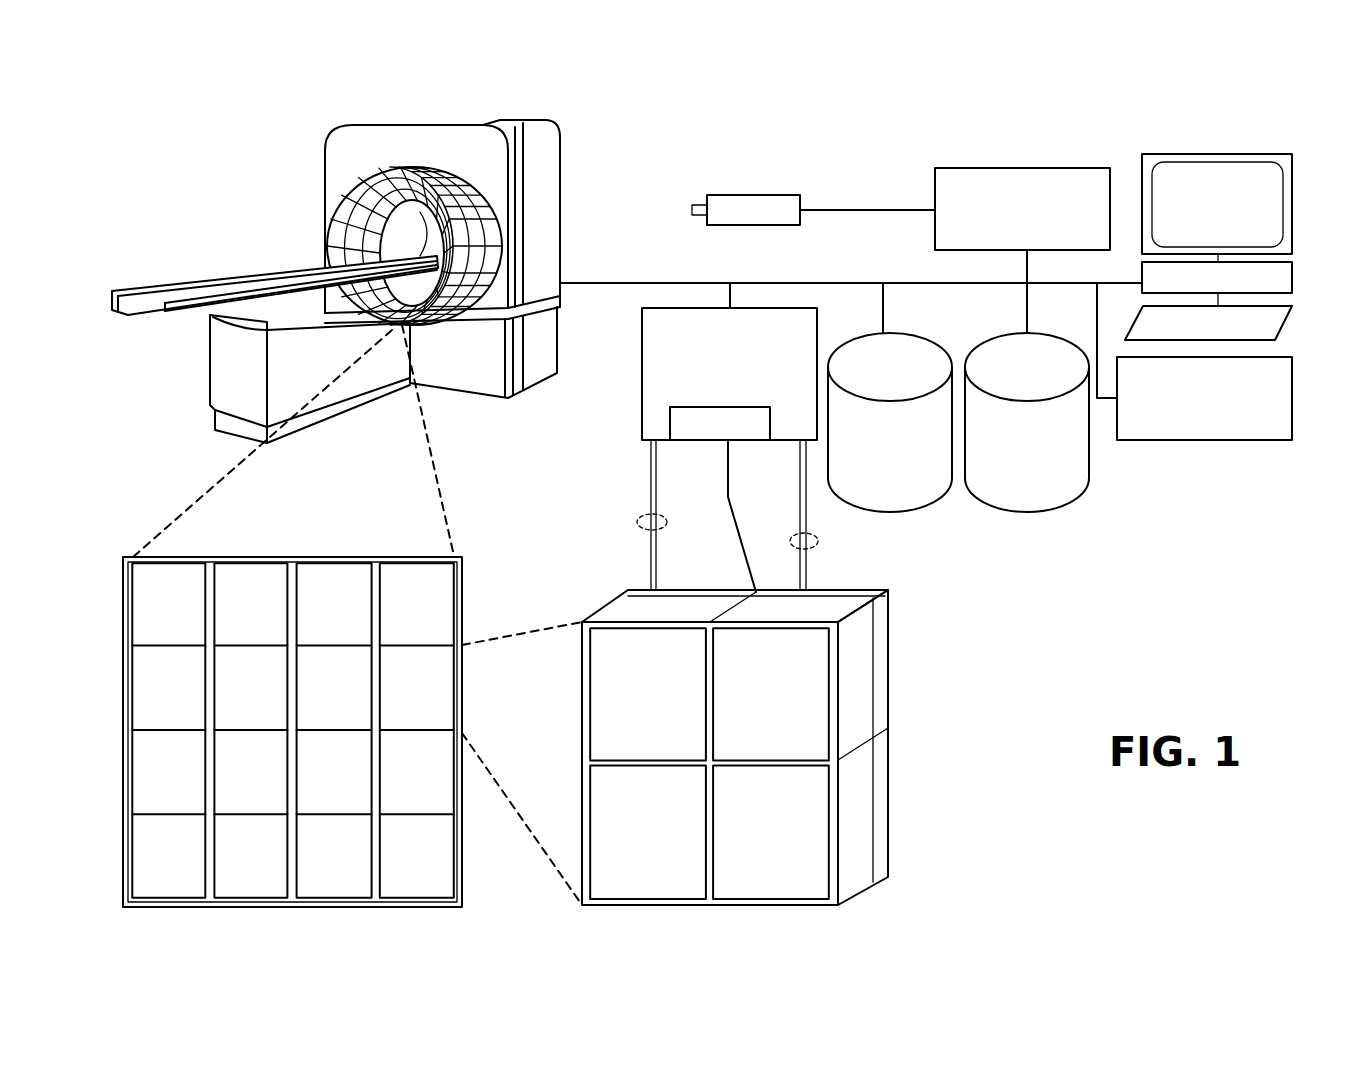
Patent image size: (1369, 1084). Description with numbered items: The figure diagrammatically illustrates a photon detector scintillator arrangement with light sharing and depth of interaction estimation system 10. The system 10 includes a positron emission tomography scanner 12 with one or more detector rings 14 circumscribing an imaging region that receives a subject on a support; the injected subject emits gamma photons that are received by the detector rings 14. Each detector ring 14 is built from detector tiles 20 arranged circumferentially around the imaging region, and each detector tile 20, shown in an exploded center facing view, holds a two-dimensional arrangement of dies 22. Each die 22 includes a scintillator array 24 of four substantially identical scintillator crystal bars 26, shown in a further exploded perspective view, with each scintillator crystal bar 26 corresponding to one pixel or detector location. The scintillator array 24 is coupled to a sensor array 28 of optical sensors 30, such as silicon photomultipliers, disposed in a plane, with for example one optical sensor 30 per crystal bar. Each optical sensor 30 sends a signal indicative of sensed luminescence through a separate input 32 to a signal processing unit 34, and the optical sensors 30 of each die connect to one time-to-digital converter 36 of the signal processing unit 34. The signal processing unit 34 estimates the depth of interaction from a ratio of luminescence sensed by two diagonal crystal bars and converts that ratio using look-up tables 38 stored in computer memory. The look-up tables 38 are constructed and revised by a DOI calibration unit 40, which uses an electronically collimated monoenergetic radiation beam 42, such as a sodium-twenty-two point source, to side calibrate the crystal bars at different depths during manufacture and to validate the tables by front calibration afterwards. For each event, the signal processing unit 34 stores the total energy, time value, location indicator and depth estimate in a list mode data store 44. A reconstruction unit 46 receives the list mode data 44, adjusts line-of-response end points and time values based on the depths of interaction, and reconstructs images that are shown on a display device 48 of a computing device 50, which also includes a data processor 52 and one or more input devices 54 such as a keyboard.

The photon detector scintillator arrangement with light sharing and depth of interac 10 is at (203, 161).
The positron emission tomography scanner 12 is at (562, 198).
The detector ring 14 is at (335, 183).
The detector tile 20 is at (456, 562).
The die 22 is at (252, 580).
The scintillator array 24 is at (572, 589).
The scintillator crystal bar 26 is at (612, 707).
The sensor array 28 is at (600, 573).
The optical sensor 30 is at (687, 595).
The input 32 is at (637, 520).
The signal processing unit 34 is at (642, 398).
The time-to-digital converter 36 is at (700, 445).
The look-up tables 38 is at (918, 338).
The DOI calibration unit 40 is at (935, 228).
The radiation beam 42 is at (740, 195).
The list mode data store 44 is at (1050, 338).
The reconstruction unit 46 is at (1292, 401).
The display device 48 is at (1292, 208).
The computing device 50 is at (1312, 176).
The data processor 52 is at (1292, 278).
The input device 54 is at (1275, 312).